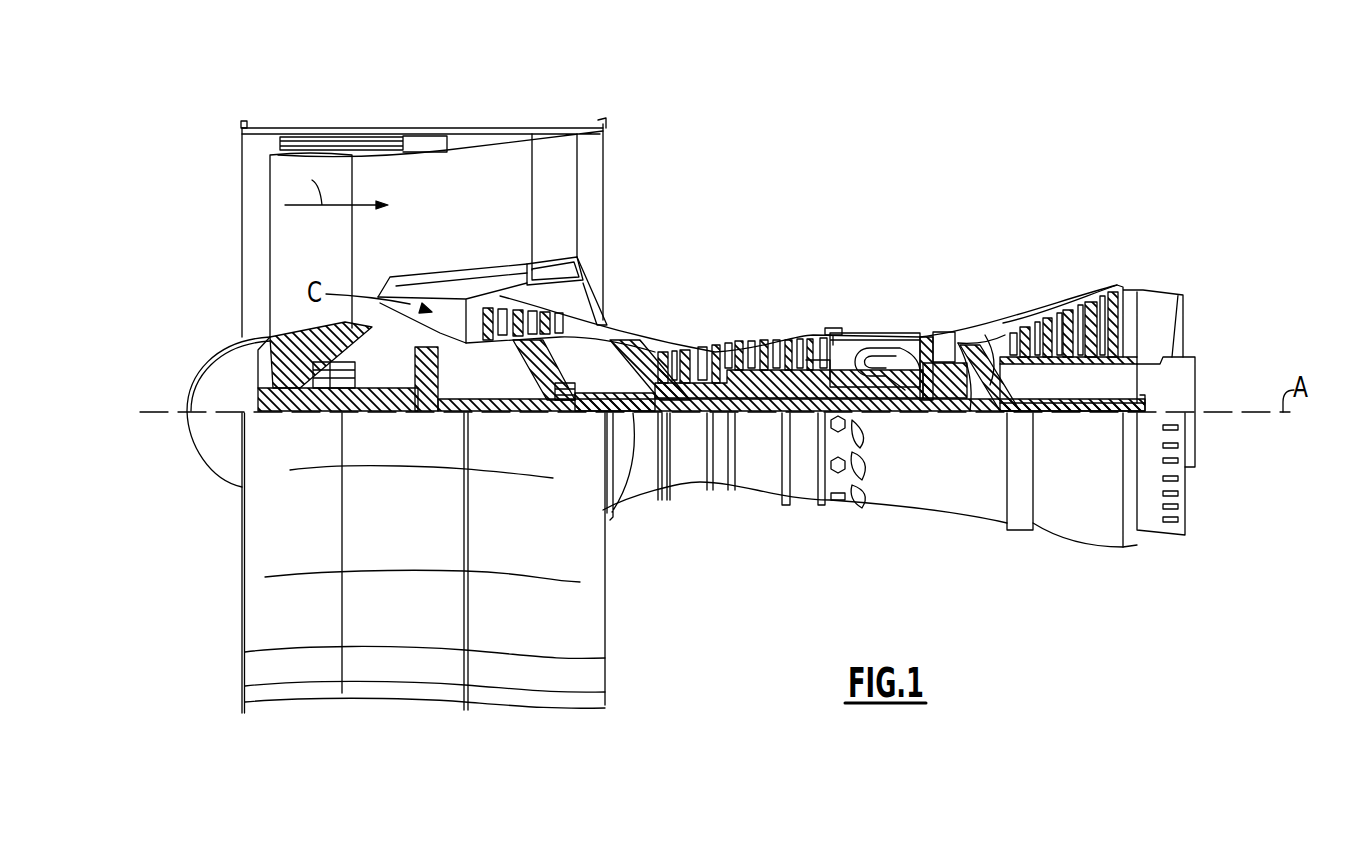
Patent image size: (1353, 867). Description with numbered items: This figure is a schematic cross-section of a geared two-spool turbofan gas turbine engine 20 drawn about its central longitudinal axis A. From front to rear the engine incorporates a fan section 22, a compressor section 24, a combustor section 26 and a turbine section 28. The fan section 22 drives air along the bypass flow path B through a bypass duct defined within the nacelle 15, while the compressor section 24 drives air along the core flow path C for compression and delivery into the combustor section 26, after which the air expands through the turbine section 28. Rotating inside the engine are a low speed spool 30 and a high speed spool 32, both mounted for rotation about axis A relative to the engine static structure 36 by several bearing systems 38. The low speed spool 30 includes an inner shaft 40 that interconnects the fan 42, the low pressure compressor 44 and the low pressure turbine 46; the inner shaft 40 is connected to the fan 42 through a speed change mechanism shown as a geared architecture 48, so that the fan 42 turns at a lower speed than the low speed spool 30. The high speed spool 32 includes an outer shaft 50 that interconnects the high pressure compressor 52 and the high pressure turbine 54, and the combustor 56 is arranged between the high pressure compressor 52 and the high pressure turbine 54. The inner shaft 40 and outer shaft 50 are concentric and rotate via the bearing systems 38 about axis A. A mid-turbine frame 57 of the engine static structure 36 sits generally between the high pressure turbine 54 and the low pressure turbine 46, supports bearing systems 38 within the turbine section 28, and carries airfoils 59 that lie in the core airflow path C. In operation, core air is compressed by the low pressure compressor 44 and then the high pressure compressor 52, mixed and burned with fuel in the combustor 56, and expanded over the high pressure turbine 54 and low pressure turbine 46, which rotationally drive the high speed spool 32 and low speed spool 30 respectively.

The nacelle 15 is at (425, 138).
The gas turbine engine 20 is at (883, 180).
The fan section 22 is at (353, 125).
The compressor section 24 is at (657, 320).
The combustor section 26 is at (878, 307).
The turbine section 28 is at (1022, 273).
The low speed spool 30 is at (763, 415).
The high speed spool 32 is at (806, 360).
The engine static structure 36 is at (802, 500).
The bearing systems 38 is at (562, 400).
The inner shaft 40 is at (627, 450).
The fan 42 is at (327, 255).
The low pressure compressor 44 is at (478, 325).
The low pressure turbine 46 is at (1070, 295).
The geared architecture 48 is at (430, 400).
The outer shaft 50 is at (882, 405).
The high pressure compressor 52 is at (730, 352).
The high pressure turbine 54 is at (945, 330).
The combustor 56 is at (885, 350).
The mid-turbine frame 57 is at (987, 322).
The airfoils 59 is at (1000, 350).